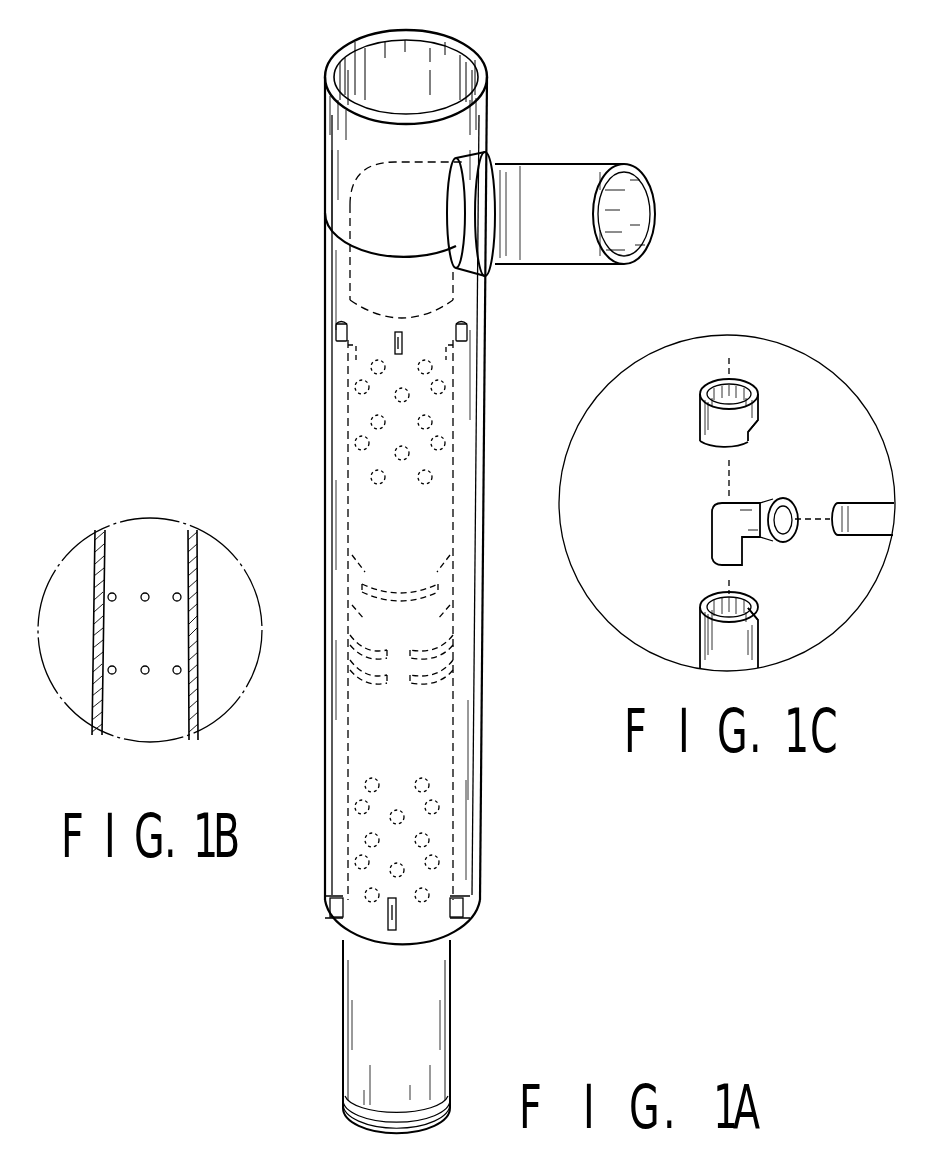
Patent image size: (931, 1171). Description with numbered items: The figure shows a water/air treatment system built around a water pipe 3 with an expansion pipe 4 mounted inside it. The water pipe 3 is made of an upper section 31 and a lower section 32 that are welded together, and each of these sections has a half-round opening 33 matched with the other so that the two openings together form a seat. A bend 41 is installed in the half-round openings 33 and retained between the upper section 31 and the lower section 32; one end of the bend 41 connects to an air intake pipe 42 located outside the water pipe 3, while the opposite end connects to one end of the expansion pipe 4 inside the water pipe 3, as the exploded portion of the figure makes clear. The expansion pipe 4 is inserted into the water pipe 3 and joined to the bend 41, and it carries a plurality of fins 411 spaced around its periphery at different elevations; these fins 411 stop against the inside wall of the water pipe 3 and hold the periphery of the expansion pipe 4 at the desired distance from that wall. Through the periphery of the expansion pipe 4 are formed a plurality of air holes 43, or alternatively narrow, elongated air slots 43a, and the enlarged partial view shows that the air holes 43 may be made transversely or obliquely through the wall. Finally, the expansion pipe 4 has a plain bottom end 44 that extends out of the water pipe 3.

In FIG. 1A, the water pipe 3 is at (325, 362).
In FIG. 1A, the expansion pipe 4 is at (440, 690).
In FIG. 1B, the expansion pipe 4 is at (195, 642).
In FIG. 1C, the upper section 31 is at (700, 425).
In FIG. 1C, the lower section 32 is at (700, 625).
In FIG. 1C, the half-round opening 33 is at (752, 437).
In FIG. 1A, the bend 41 is at (373, 200).
In FIG. 1C, the bend 41 is at (722, 522).
In FIG. 1A, the air intake pipe 42 is at (588, 162).
In FIG. 1C, the air intake pipe 42 is at (858, 503).
In FIG. 1A, the air holes 43 is at (362, 443).
In FIG. 1B, the air holes 43 is at (143, 600).
In FIG. 1A, the air slots 43a is at (430, 594).
In FIG. 1A, the plain bottom end 44 is at (430, 970).
In FIG. 1A, the fins 411 is at (336, 333).